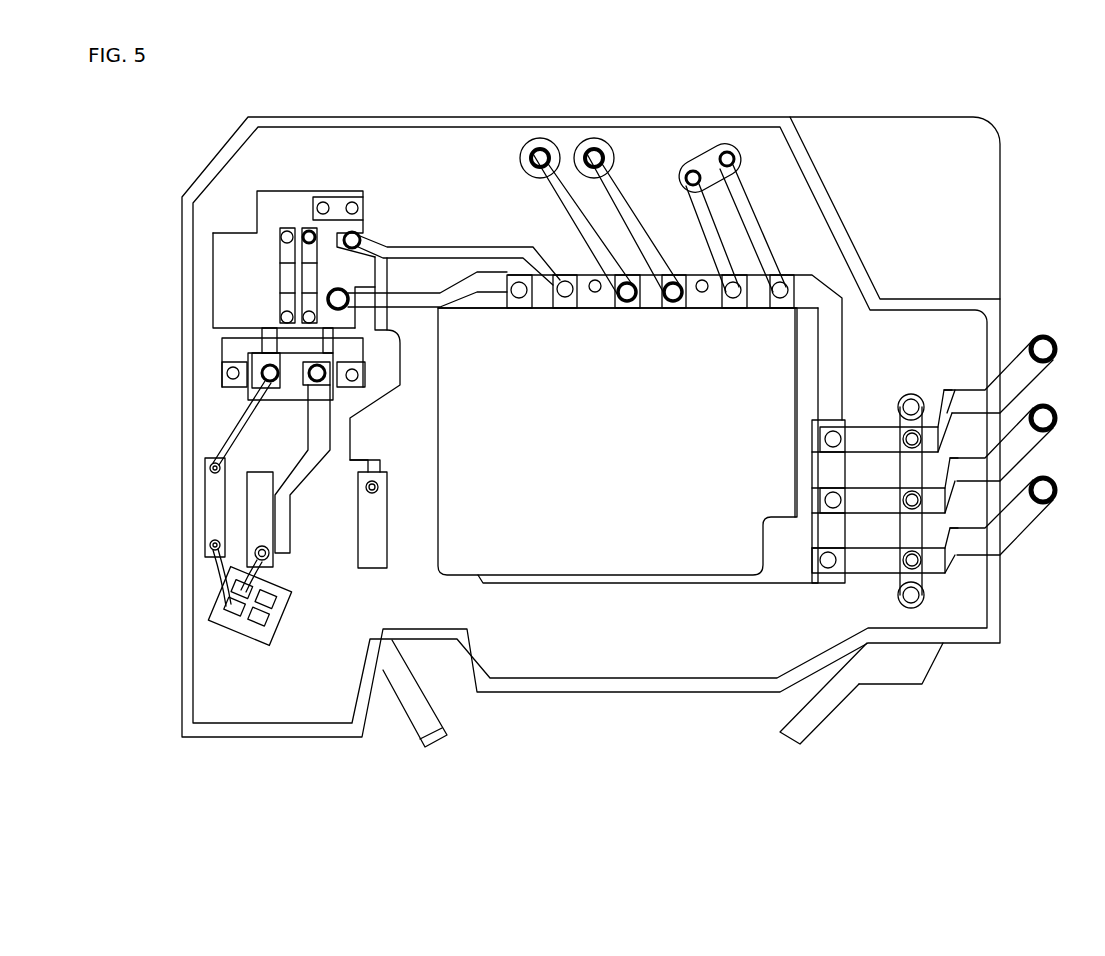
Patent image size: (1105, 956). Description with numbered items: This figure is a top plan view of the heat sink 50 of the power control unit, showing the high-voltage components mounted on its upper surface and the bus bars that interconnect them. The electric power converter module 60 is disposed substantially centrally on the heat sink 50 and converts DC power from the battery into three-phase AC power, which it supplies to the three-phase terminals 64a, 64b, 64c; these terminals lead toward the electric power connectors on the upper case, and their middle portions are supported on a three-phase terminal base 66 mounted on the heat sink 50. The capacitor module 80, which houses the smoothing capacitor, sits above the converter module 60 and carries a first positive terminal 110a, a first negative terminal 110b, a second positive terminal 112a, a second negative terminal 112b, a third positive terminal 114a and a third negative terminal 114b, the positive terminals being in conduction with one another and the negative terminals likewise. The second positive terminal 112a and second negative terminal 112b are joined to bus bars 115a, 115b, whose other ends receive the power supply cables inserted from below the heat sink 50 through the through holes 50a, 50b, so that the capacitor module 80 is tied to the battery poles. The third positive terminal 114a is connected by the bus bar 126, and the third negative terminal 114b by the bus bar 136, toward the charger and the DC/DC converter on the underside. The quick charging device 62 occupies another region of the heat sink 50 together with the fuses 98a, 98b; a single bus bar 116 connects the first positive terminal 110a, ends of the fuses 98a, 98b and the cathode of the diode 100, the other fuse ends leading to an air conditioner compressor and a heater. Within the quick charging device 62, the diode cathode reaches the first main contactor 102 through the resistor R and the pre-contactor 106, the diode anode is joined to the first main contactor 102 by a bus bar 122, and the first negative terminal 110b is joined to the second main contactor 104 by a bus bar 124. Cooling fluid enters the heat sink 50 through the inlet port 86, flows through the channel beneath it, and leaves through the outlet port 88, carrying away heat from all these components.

The heat sink 50 is at (907, 128).
The through hole 50a is at (540, 137).
The through hole 50b is at (594, 137).
The bus bar 136 is at (764, 148).
The bus bar 115a is at (520, 164).
The bus bar 115b is at (608, 172).
The bus bar 126 is at (717, 250).
The fuse 98a is at (283, 253).
The fuse 98b is at (308, 233).
The bus bar 116 is at (402, 302).
The first positive terminal 110a is at (518, 303).
The first negative terminal 110b is at (565, 303).
The second positive terminal 112a is at (630, 305).
The second negative terminal 112b is at (675, 305).
The third positive terminal 114a is at (733, 303).
The third negative terminal 114b is at (780, 303).
The electric power converter module 60 is at (835, 355).
The three-phase terminal 64a is at (1033, 512).
The three-phase terminal 64b is at (1033, 438).
The three-phase terminal 64c is at (1033, 367).
The three-phase terminal base 66 is at (905, 478).
The diode 100 is at (293, 383).
The bus bar 122 is at (318, 408).
The quick charging device 62 is at (197, 514).
The resistor R is at (217, 523).
The first main contactor 102 is at (253, 540).
The pre-contactor 106 is at (215, 627).
The bus bar 124 is at (400, 385).
The second main contactor 104 is at (383, 502).
The capacitor module 80 is at (613, 587).
The inlet port 86 is at (418, 720).
The outlet port 88 is at (802, 723).